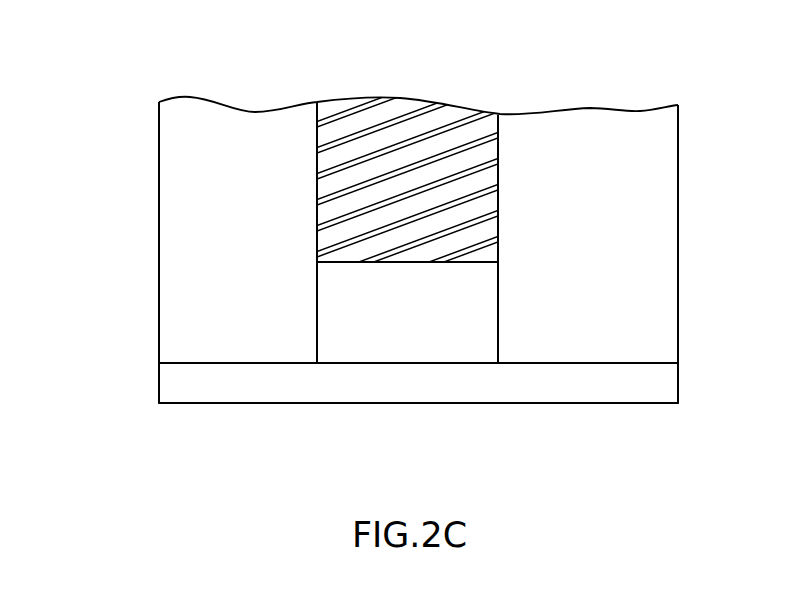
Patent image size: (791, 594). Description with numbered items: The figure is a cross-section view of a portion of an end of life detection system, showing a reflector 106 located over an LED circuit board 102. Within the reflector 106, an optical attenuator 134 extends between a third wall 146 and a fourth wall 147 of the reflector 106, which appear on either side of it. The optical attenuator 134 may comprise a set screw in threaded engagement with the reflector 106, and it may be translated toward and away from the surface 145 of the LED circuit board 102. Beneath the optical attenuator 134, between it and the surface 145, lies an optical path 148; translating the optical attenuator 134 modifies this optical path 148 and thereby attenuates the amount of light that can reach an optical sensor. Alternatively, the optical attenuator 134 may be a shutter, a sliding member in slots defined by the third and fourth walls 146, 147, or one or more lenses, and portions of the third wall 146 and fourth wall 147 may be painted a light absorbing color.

The reflector 106 is at (158, 123).
The LED circuit board 102 is at (215, 392).
The optical attenuator 134 is at (367, 123).
The surface 145 is at (397, 362).
The third wall 146 is at (230, 200).
The fourth wall 147 is at (590, 200).
The optical path 148 is at (521, 263).